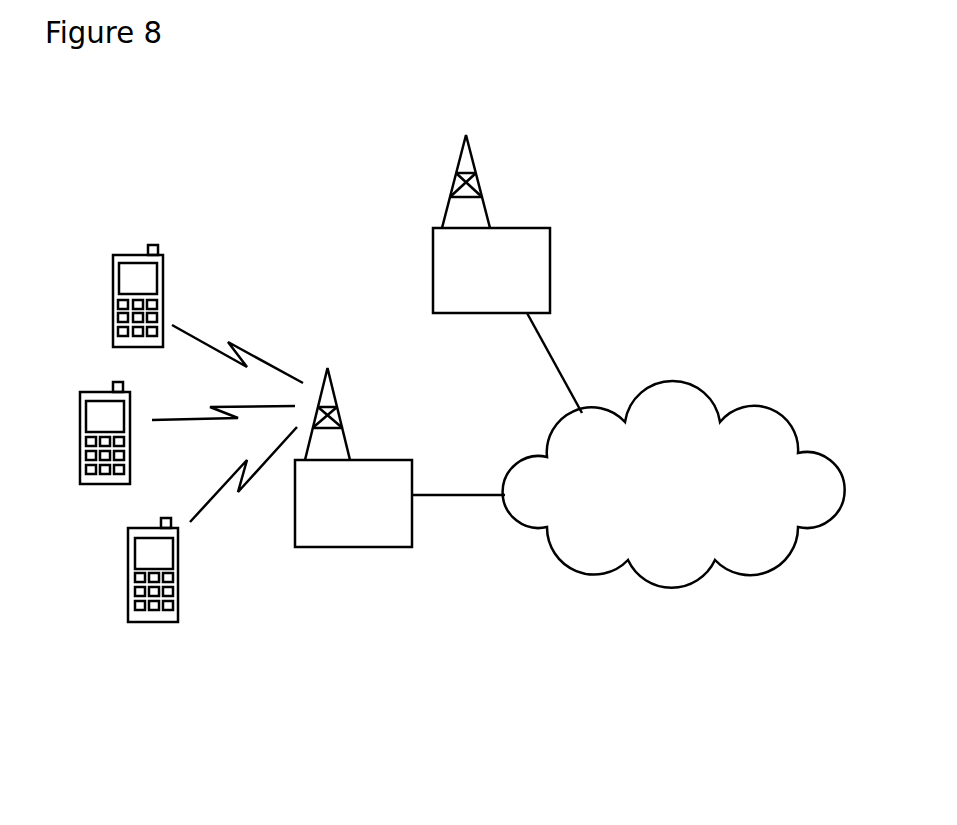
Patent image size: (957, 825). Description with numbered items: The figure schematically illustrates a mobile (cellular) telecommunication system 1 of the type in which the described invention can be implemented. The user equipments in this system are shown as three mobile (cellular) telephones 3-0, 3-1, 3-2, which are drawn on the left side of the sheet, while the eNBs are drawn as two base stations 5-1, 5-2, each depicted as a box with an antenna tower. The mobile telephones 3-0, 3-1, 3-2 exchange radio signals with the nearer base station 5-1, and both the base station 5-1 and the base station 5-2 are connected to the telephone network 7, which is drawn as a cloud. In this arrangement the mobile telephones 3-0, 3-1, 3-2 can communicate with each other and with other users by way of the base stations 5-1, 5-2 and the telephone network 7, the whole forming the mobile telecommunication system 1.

The mobile telecommunication system 1 is at (578, 712).
The mobile telephone 3-0 is at (113, 338).
The mobile telephone 3-1 is at (82, 477).
The mobile telephone 3-2 is at (138, 615).
The base station 5-1 is at (365, 473).
The base station 5-2 is at (538, 245).
The telephone network 7 is at (678, 403).